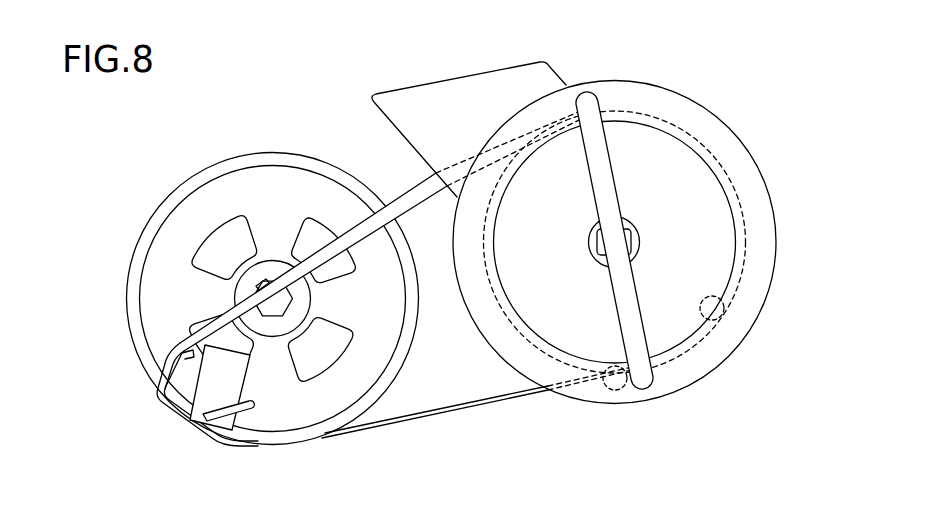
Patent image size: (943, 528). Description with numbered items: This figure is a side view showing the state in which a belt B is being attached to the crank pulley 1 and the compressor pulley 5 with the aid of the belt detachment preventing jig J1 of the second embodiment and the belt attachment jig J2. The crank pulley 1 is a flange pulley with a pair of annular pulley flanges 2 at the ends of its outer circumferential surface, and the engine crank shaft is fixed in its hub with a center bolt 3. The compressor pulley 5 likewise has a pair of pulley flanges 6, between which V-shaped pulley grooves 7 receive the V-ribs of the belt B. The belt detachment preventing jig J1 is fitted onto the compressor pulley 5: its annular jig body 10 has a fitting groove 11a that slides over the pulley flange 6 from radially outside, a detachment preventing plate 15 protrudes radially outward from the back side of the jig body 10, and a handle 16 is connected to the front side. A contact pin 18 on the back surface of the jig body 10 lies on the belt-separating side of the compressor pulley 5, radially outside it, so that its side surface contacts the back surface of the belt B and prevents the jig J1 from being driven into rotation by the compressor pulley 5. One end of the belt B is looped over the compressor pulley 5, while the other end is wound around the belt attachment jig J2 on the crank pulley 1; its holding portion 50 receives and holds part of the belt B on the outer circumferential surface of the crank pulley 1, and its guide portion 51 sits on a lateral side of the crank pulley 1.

The crank pulley 1 is at (128, 288).
The pulley flanges 2 is at (221, 168).
The center bolt 3 is at (280, 297).
The compressor pulley 5 is at (707, 208).
The pulley flanges 6 is at (716, 154).
The pulley grooves 7 is at (630, 236).
The jig body 10 is at (762, 255).
The fitting groove 11a is at (715, 320).
The detachment preventing plate 15 is at (457, 95).
The handle 16 is at (650, 390).
The contact pin 18 is at (608, 390).
The holding portion 50 is at (164, 411).
The guide portion 51 is at (170, 357).
The belt B is at (397, 198).
The belt detachment preventing jig J1 is at (646, 215).
The belt attachment jig J2 is at (173, 428).